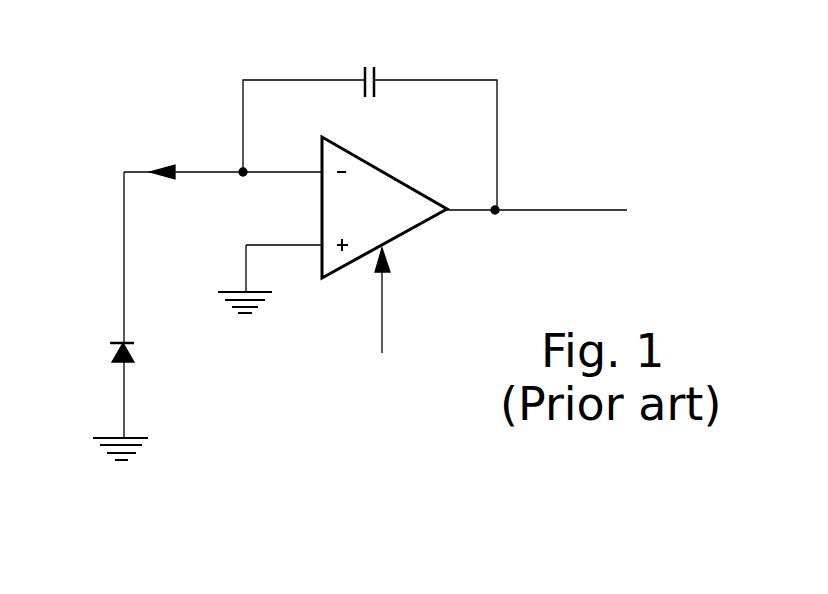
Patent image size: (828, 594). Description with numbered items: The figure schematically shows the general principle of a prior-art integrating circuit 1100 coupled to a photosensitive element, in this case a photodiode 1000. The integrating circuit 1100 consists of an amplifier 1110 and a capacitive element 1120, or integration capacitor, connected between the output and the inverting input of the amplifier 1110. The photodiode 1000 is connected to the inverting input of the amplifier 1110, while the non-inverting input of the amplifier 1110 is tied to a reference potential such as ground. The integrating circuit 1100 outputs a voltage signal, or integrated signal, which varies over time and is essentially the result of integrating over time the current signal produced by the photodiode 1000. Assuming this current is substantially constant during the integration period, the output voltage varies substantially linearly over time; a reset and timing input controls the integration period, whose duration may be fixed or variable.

The integrating circuit 1100 is at (176, 114).
The capacitive element 1120 is at (377, 72).
The amplifier 1110 is at (407, 222).
The photodiode 1000 is at (132, 360).